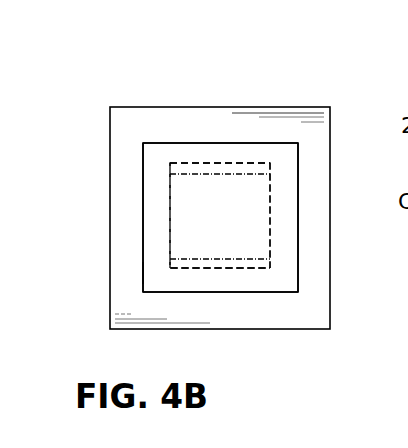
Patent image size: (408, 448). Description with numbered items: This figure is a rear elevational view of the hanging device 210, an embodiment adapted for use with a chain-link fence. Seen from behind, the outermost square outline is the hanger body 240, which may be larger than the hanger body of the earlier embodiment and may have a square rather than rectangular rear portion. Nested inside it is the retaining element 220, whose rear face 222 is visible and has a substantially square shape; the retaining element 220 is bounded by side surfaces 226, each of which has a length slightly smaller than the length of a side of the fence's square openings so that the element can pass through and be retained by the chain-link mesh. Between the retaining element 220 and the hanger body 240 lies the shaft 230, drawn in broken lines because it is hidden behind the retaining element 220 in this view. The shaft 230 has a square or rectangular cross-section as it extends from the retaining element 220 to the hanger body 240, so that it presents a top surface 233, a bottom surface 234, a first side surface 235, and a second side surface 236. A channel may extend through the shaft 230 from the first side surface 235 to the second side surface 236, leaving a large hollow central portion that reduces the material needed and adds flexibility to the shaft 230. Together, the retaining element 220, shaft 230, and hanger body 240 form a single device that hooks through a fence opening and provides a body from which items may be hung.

The hanging device 210 is at (101, 84).
The retaining element 220 is at (134, 155).
The rear face 222 is at (155, 271).
The side surfaces 226 is at (195, 142).
The shaft 230 is at (174, 154).
The top surface 233 is at (212, 163).
The bottom surface 234 is at (190, 270).
The first side surface 235 is at (170, 190).
The second side surface 236 is at (270, 183).
The hanger body 240 is at (265, 99).